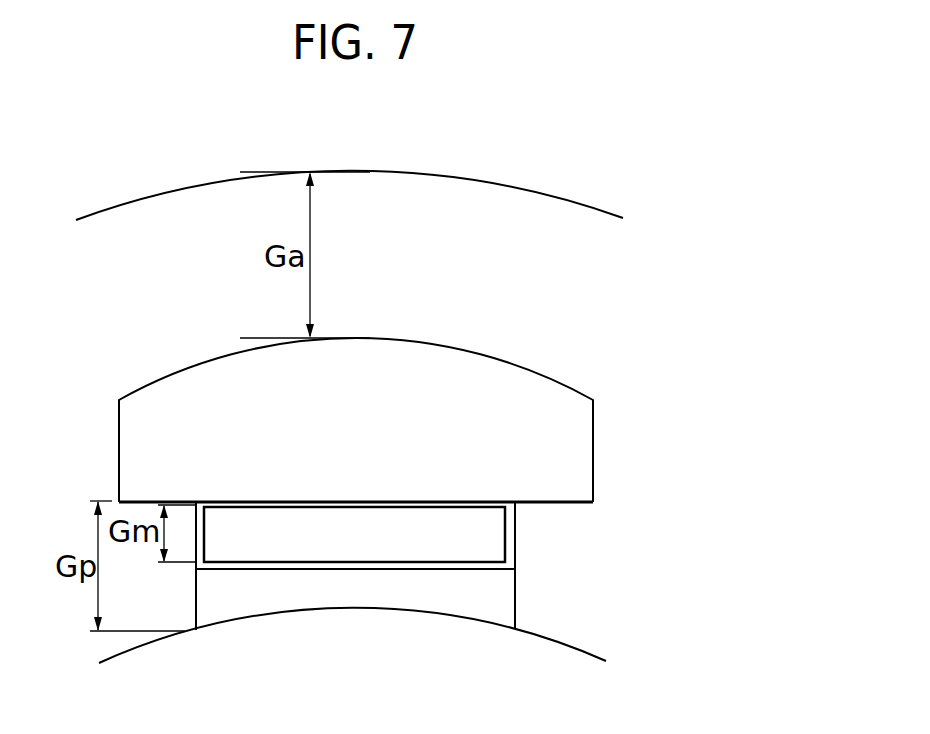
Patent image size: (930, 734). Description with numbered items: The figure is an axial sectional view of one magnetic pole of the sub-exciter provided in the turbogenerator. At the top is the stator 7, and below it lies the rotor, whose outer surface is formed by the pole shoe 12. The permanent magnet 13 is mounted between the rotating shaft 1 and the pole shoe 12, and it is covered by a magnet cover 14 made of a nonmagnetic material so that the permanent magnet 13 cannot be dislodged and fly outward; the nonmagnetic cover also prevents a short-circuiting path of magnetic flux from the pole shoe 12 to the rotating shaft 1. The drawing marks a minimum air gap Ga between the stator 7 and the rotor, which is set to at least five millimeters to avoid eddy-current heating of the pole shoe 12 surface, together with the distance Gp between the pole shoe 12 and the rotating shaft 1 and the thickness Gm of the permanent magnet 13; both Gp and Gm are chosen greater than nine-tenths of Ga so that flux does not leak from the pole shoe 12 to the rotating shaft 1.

The stator 7 is at (437, 167).
The pole shoe 12 is at (493, 372).
The permanent magnet 13 is at (492, 532).
The magnet cover 14 is at (488, 571).
The rotating shaft 1 is at (553, 662).